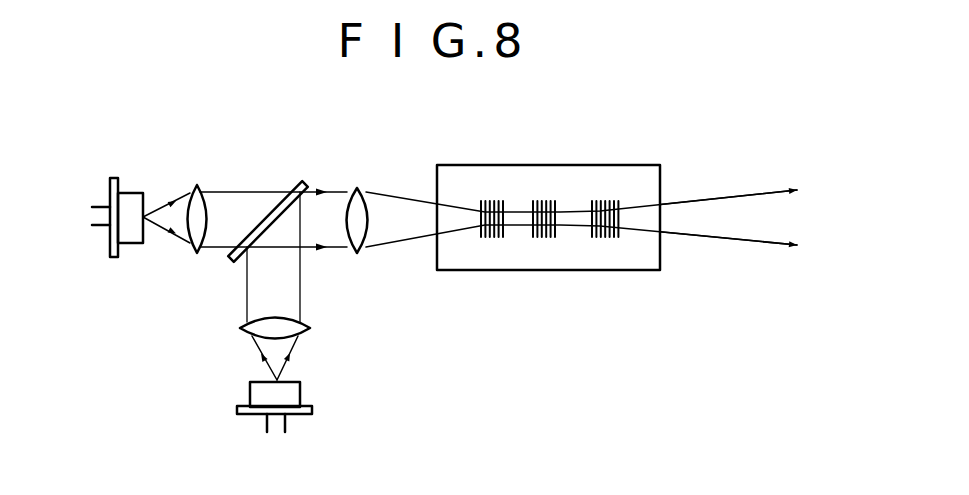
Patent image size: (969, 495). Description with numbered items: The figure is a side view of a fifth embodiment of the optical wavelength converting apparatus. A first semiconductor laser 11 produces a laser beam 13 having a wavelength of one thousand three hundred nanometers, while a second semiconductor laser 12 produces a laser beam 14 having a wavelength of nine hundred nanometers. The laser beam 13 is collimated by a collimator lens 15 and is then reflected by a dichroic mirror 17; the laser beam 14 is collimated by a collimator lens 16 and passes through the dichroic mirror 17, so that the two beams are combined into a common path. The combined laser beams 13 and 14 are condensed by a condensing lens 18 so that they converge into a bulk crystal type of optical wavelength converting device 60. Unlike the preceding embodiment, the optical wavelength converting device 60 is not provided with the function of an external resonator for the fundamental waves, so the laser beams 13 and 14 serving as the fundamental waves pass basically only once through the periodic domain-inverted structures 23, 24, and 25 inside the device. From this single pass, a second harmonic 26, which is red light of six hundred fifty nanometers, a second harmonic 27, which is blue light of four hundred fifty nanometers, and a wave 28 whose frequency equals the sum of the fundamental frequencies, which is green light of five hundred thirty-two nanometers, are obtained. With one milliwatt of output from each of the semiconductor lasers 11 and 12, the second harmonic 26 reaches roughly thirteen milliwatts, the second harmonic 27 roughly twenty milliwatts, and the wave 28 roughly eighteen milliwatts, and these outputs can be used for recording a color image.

The first semiconductor laser 11 is at (295, 393).
The second semiconductor laser 12 is at (133, 193).
The laser beam 13 is at (255, 347).
The laser beam 14 is at (180, 197).
The collimator lens 15 is at (271, 314).
The collimator lens 16 is at (213, 200).
The dichroic mirror 17 is at (270, 210).
The condensing lens 18 is at (340, 210).
The periodic domain-inverted structure 23 is at (493, 240).
The periodic domain-inverted structure 24 is at (552, 240).
The periodic domain-inverted structure 25 is at (610, 240).
The second harmonic 26 is at (737, 184).
The second harmonic 27 is at (728, 196).
The sum-frequency wave 28 is at (728, 239).
The optical wavelength converting device 60 is at (557, 158).